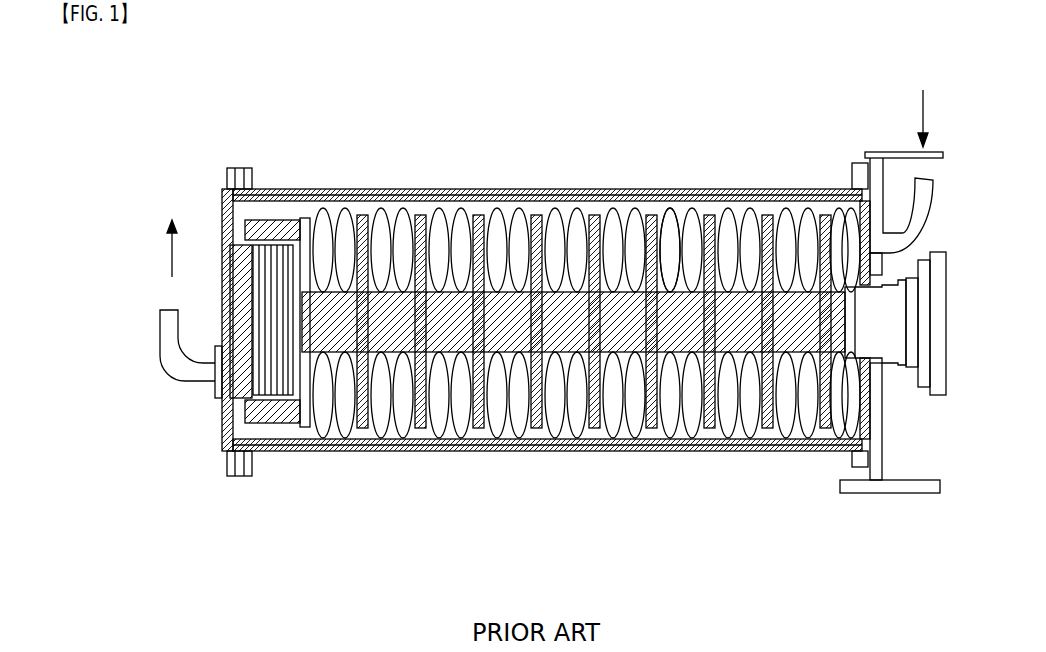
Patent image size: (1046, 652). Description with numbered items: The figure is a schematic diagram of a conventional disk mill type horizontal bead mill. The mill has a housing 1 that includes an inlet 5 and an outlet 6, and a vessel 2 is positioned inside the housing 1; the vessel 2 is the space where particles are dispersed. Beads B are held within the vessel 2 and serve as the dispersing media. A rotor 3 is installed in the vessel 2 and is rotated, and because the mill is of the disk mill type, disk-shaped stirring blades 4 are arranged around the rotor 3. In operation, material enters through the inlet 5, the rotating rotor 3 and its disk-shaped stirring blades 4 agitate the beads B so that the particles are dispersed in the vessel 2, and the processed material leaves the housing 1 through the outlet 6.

The housing 1 is at (638, 189).
The vessel 2 is at (749, 190).
The rotor 3 is at (566, 216).
The disk-shaped stirring blades 4 is at (651, 216).
The beads B is at (674, 217).
The inlet 5 is at (912, 195).
The outlet 6 is at (186, 318).